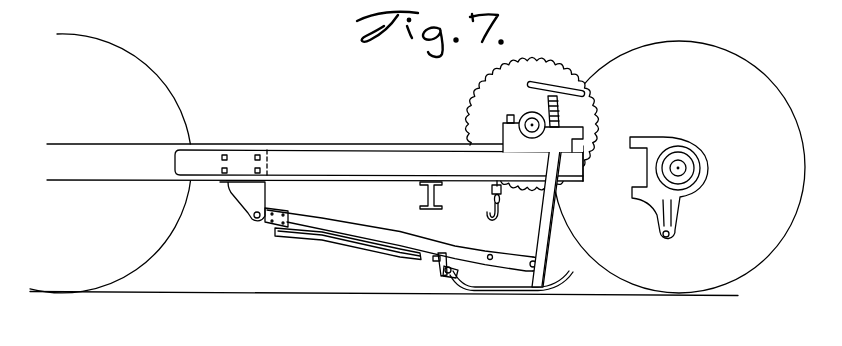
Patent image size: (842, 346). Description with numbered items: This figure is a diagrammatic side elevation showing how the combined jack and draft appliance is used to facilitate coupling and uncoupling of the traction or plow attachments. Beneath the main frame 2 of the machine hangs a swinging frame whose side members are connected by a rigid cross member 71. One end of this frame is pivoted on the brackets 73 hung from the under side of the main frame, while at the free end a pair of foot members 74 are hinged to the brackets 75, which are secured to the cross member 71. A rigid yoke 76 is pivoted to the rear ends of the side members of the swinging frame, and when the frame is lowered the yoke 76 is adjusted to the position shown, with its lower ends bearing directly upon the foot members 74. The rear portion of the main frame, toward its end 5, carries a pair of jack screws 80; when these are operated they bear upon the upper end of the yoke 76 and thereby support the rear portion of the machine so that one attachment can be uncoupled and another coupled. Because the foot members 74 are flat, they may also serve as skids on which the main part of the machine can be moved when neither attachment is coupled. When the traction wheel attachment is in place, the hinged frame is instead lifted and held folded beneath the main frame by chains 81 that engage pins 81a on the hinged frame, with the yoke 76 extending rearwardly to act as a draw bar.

The frame beam 2 is at (347, 160).
The beam end / frame member 5 is at (580, 177).
The cross member 71 is at (435, 257).
The brackets 73 is at (242, 197).
The foot members 74 is at (498, 296).
The brackets 75 is at (440, 276).
The yoke 76 is at (538, 217).
The jack screws 80 is at (560, 104).
The chains 81 is at (491, 193).
The pins 81a is at (490, 257).